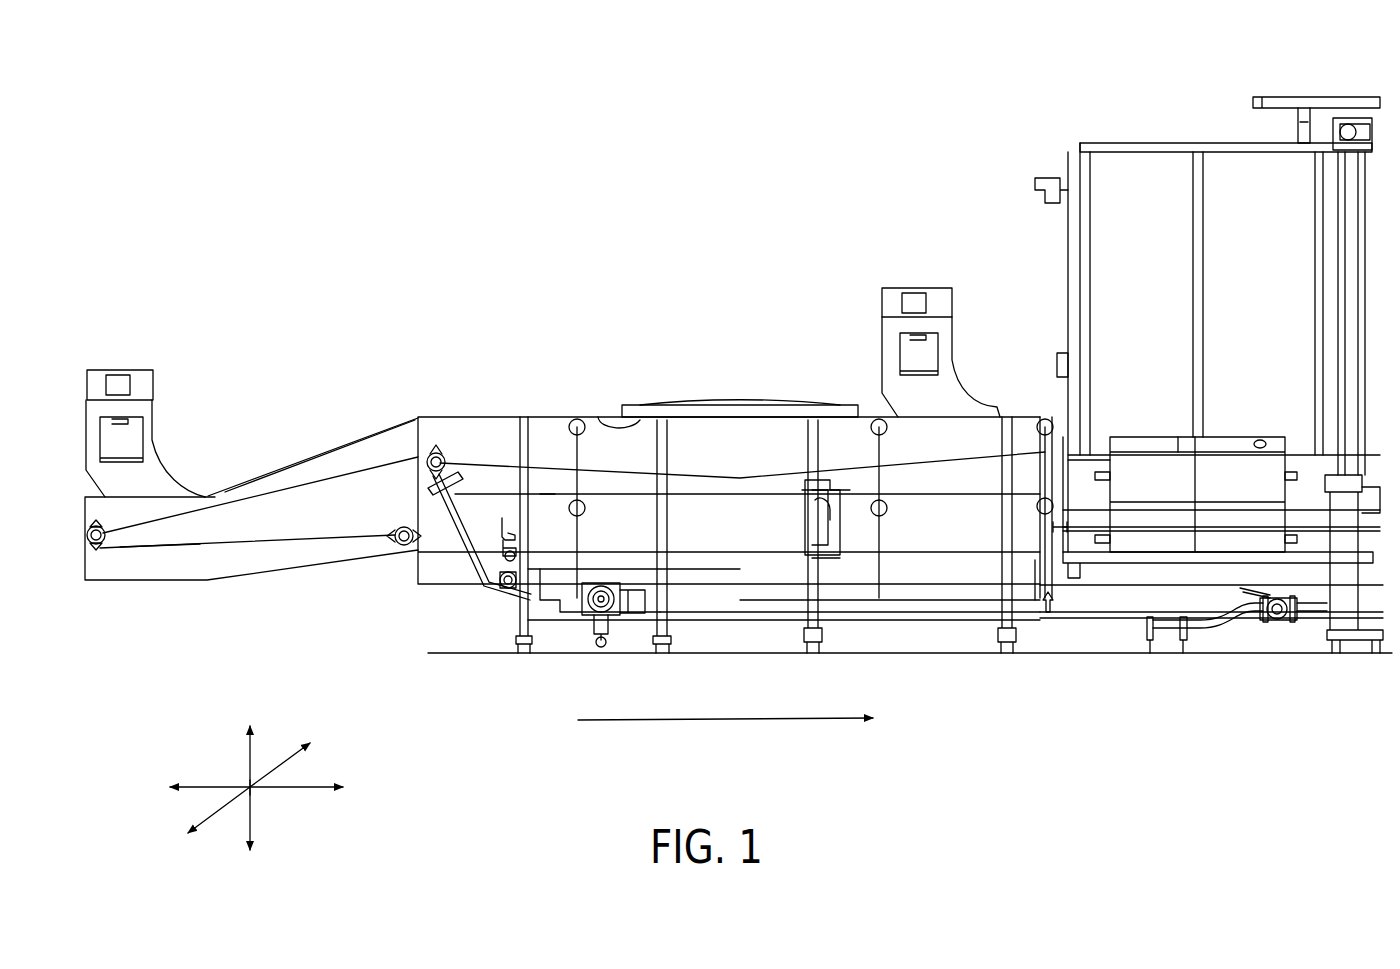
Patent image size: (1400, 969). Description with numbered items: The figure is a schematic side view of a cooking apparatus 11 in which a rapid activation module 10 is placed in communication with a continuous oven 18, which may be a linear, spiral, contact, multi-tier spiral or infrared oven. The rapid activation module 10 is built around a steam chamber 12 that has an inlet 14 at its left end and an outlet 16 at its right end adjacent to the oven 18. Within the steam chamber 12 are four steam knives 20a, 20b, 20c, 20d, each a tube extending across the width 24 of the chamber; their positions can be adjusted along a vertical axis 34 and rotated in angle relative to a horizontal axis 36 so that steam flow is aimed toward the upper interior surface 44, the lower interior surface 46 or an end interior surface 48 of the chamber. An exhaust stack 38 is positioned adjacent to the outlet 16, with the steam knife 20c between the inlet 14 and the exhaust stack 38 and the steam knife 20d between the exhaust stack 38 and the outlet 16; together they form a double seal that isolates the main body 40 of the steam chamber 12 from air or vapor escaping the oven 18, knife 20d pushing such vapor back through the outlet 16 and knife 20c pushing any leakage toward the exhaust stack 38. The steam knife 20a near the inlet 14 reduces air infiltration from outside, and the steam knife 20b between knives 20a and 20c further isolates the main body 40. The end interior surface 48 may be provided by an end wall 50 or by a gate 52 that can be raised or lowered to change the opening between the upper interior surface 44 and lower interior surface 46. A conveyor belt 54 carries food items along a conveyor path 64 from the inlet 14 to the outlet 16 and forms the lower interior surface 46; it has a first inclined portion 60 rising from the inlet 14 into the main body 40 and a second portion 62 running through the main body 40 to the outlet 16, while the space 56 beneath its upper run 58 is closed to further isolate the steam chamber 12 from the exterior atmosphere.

The rapid activation module 10 is at (382, 270).
The cooking apparatus 11 is at (646, 220).
The steam chamber 12 is at (540, 408).
The inlet 14 is at (78, 566).
The outlet 16 is at (1046, 470).
The continuous oven 18 is at (1138, 140).
The steam knife 20a is at (210, 490).
The steam knife 20b is at (578, 410).
The steam knife 20c is at (876, 410).
The steam knife 20d is at (1040, 412).
The width 24 is at (305, 745).
The vertical axis 34 is at (255, 733).
The horizontal axis 36 is at (330, 787).
The exhaust stack 38 is at (910, 286).
The main body 40 is at (733, 402).
The upper interior surface 44 is at (634, 415).
The lower interior surface 46 is at (482, 468).
The end interior surface 48 is at (160, 440).
The end wall 50 is at (1046, 490).
The gate 52 is at (1052, 457).
The conveyor belt 54 is at (328, 468).
The space 56 is at (618, 512).
The upper run 58 is at (548, 470).
The first inclined portion 60 is at (178, 522).
The second portion 62 is at (706, 482).
The conveyor path 64 is at (868, 718).